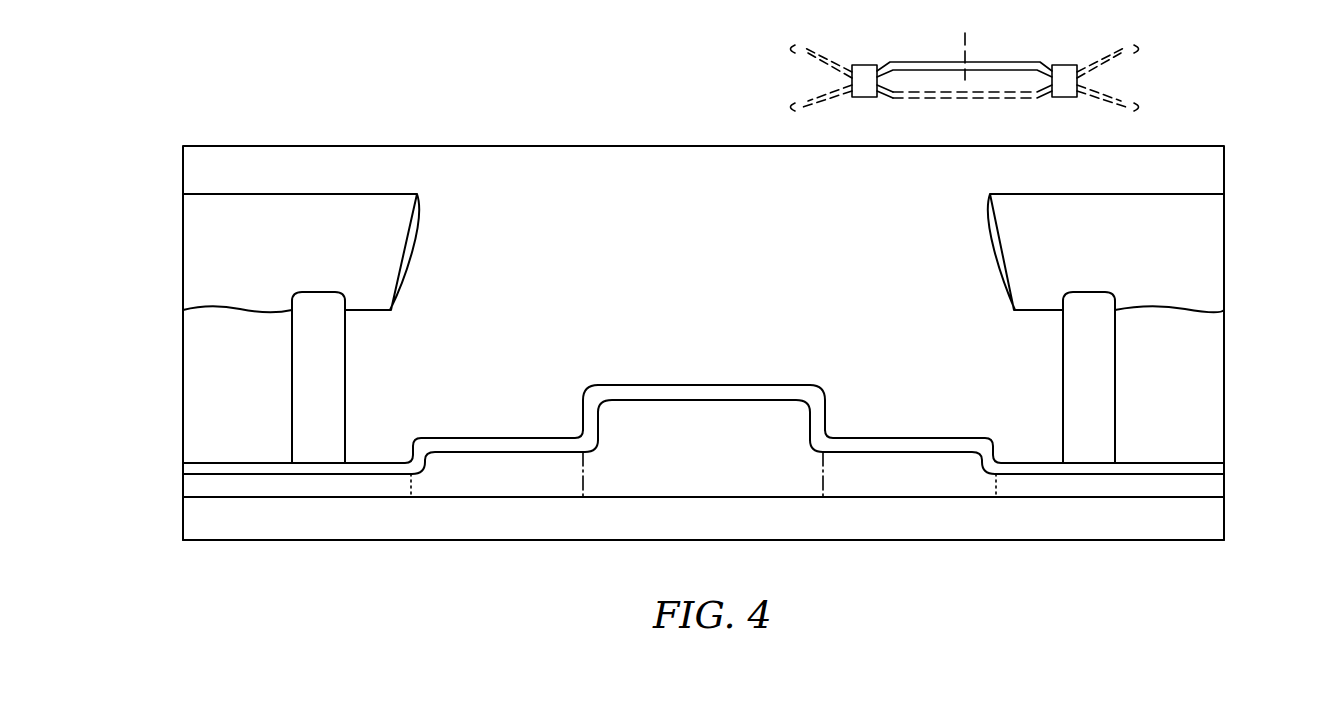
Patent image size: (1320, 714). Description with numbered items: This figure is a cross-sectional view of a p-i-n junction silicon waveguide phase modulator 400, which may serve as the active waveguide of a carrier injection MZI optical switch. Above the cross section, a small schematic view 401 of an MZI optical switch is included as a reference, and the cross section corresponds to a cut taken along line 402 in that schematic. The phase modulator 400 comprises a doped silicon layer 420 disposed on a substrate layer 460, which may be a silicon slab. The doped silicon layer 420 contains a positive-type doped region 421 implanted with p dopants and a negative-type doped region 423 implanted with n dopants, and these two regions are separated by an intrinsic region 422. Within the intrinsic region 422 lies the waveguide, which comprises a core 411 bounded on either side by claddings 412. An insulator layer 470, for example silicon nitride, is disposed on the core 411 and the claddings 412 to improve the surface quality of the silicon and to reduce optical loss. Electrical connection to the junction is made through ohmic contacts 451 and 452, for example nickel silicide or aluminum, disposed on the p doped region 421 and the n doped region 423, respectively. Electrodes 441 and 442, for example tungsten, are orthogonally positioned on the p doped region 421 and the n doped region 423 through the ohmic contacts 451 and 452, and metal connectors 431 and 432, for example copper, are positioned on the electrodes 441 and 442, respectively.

The p-i-n junction silicon waveguide phase modulator 400 is at (250, 114).
The schematic view 401 is at (835, 13).
The line 402 is at (967, 45).
The core 411 is at (703, 487).
The claddings 412 is at (497, 487).
The doped silicon layer 420 is at (1212, 485).
The p doped region 421 is at (213, 497).
The intrinsic region 422 is at (440, 497).
The n doped region 423 is at (1195, 497).
The metal connector 431 is at (183, 251).
The metal connector 432 is at (1224, 250).
The electrode 441 is at (292, 383).
The electrode 442 is at (1115, 384).
The ohmic contact 451 is at (195, 468).
The ohmic contact 452 is at (1212, 468).
The substrate layer 460 is at (1228, 512).
The insulator layer 470 is at (657, 384).